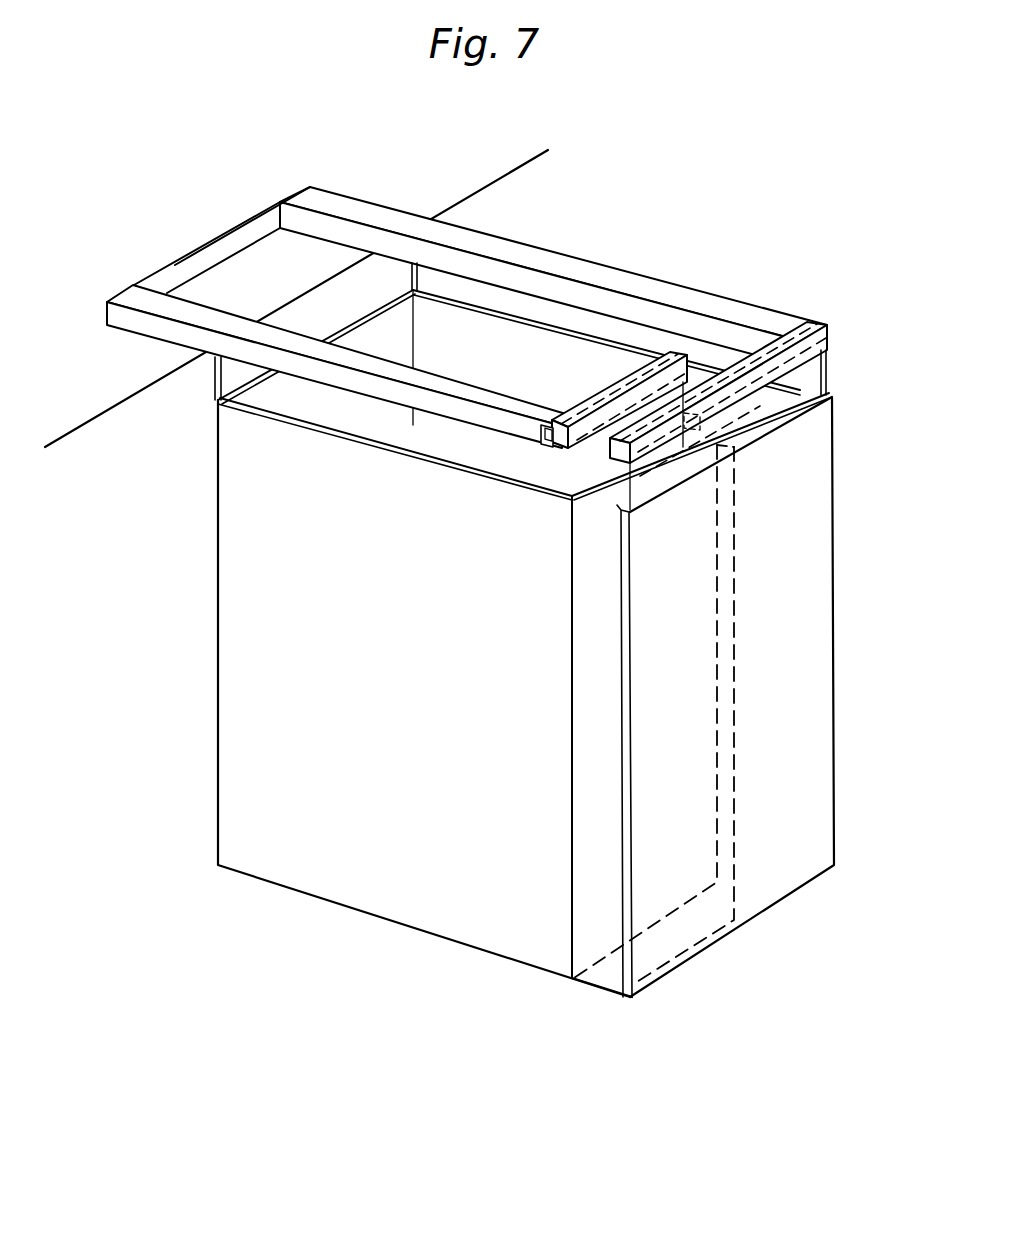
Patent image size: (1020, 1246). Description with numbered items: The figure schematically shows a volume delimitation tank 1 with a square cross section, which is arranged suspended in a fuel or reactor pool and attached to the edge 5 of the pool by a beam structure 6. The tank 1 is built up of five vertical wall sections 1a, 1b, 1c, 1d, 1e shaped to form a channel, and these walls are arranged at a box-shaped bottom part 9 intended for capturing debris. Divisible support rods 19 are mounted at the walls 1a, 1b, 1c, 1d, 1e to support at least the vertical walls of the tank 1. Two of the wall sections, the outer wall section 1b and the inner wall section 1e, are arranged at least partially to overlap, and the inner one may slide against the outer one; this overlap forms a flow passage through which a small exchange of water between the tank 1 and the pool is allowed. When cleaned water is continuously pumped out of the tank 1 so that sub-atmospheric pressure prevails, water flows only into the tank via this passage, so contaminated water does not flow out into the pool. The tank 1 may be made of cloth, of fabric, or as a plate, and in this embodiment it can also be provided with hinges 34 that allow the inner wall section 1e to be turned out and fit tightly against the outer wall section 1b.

The volume delimitation tank 1 is at (522, 637).
The wall section 1a is at (578, 357).
The outer wall section 1b is at (800, 573).
The wall section 1c is at (253, 676).
The wall section 1d is at (300, 398).
The inner wall section 1e is at (592, 890).
The edge of the pool 5 is at (498, 176).
The beam structure 6 is at (370, 205).
The bottom part 9 is at (613, 980).
The support rods 19 is at (418, 273).
The hinges 34 is at (545, 452).